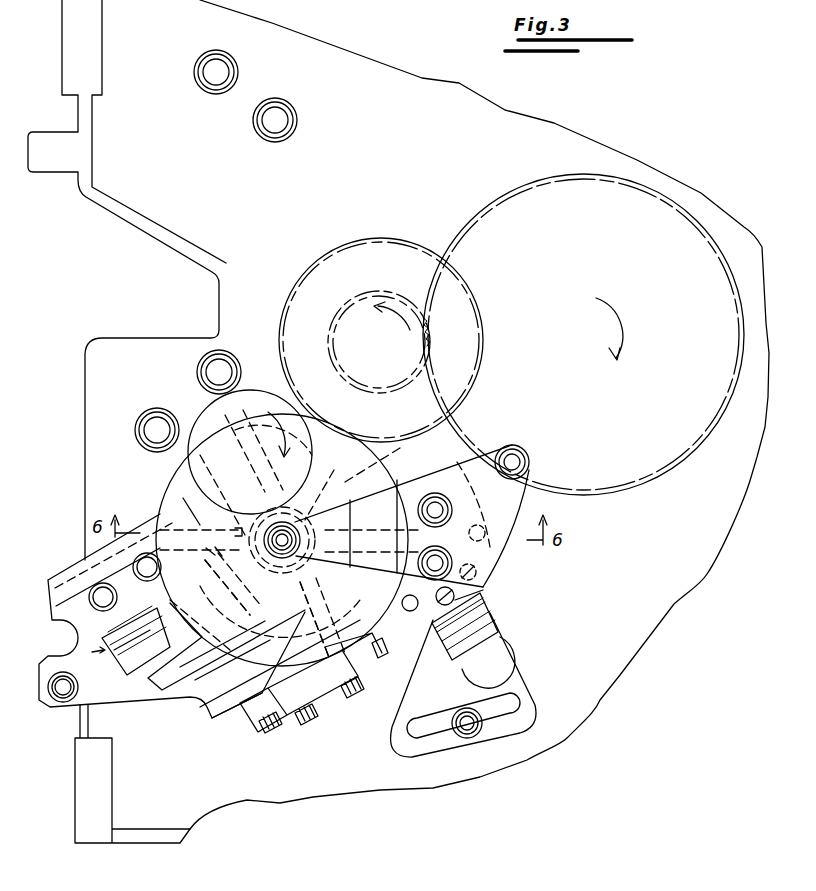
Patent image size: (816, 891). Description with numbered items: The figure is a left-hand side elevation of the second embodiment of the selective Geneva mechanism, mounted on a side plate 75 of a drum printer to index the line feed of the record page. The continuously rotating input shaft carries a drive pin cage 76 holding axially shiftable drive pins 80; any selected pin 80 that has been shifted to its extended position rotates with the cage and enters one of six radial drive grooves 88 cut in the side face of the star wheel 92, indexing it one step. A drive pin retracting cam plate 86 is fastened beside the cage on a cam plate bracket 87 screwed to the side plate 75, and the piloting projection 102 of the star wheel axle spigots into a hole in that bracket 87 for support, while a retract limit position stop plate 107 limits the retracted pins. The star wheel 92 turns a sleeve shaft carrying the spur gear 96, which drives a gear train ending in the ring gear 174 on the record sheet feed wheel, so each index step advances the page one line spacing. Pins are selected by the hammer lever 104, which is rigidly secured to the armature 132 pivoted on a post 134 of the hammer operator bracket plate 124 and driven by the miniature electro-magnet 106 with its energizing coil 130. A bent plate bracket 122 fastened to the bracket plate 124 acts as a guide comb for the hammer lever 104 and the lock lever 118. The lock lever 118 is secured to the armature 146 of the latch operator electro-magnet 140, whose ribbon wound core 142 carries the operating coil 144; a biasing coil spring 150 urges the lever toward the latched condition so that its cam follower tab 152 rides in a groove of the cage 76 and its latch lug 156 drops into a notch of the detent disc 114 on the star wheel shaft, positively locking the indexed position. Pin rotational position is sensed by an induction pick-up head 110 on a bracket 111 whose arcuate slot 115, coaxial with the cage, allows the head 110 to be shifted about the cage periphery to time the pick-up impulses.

The side plate 75 is at (357, 778).
The drive pin cage 76 is at (490, 592).
The drive pins 80 is at (455, 600).
The drive pin retracting cam plate 86 is at (495, 557).
The cam plate bracket 87 is at (480, 467).
The radial drive groove 88 is at (216, 440).
The star wheel 92 is at (182, 490).
The spur gear 96 is at (205, 547).
The piloting projection 102 is at (300, 538).
The drive pin selecting hammer lever 104 is at (384, 628).
The electro-magnet 106 is at (325, 718).
The retract limit position stop plate 107 is at (508, 505).
The induction pick-up head 110 is at (500, 622).
The bracket 111 is at (520, 677).
The detent disc 114 is at (242, 535).
The arcuate slot 115 is at (515, 708).
The lock lever 118 is at (262, 628).
The bent plate bracket 122 is at (384, 650).
The hammer operator bracket plate 124 is at (127, 697).
The energizing coil 130 is at (332, 700).
The armature 132 is at (285, 727).
The post 134 is at (258, 736).
The latch operator electro-magnet 140 is at (96, 659).
The ribbon wound core 142 is at (157, 635).
The operating coil 144 is at (127, 670).
The armature 146 is at (177, 670).
The biasing coil spring 150 is at (172, 590).
The cam follower tab 152 is at (358, 570).
The latch lug 156 is at (260, 593).
The ring gear 174 is at (504, 197).